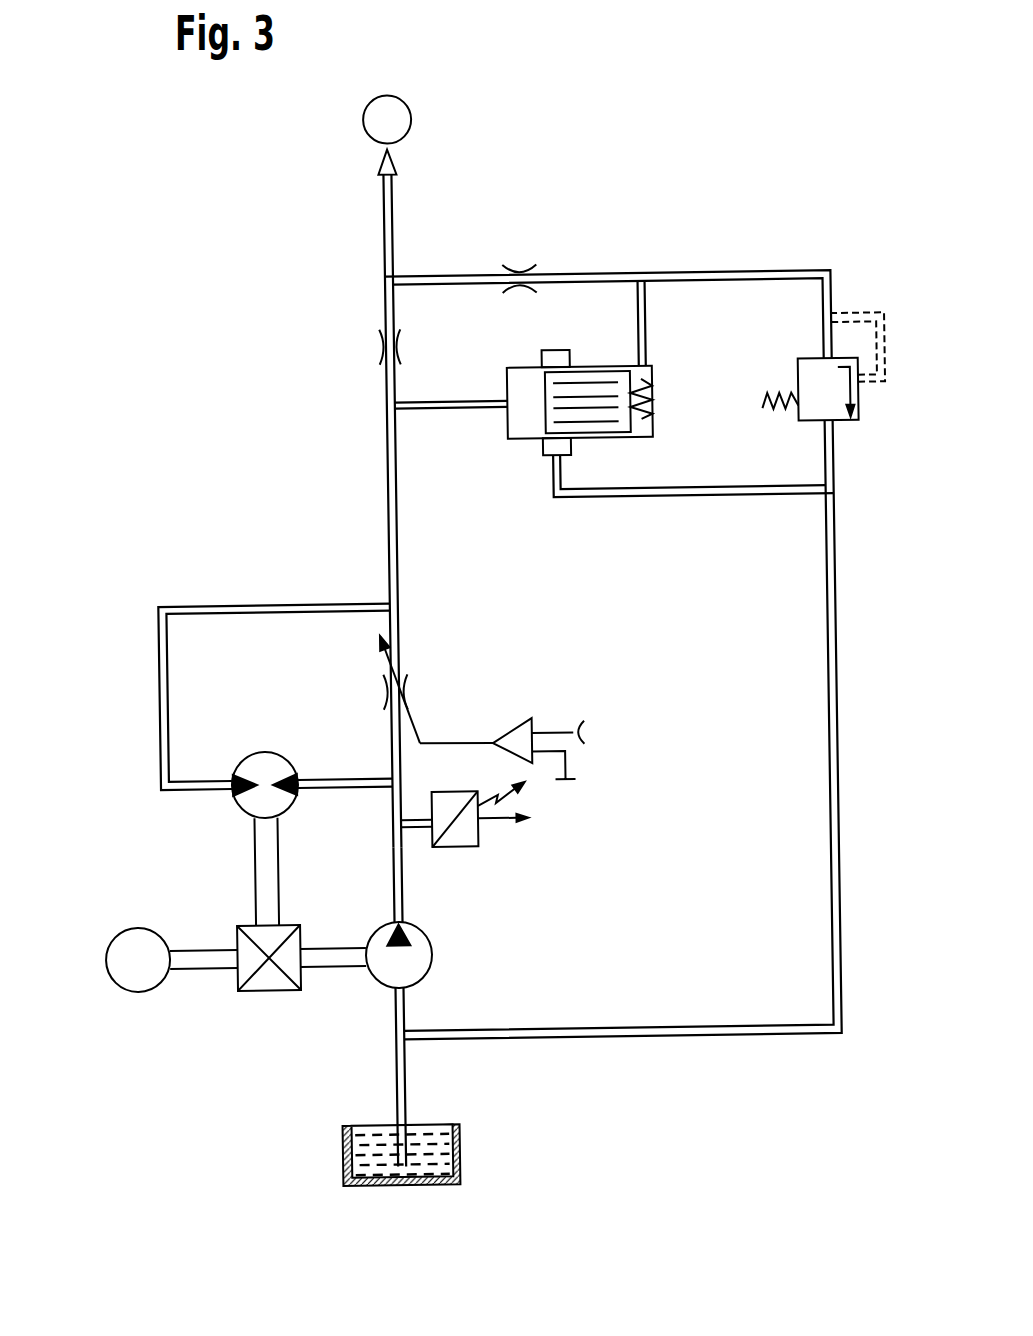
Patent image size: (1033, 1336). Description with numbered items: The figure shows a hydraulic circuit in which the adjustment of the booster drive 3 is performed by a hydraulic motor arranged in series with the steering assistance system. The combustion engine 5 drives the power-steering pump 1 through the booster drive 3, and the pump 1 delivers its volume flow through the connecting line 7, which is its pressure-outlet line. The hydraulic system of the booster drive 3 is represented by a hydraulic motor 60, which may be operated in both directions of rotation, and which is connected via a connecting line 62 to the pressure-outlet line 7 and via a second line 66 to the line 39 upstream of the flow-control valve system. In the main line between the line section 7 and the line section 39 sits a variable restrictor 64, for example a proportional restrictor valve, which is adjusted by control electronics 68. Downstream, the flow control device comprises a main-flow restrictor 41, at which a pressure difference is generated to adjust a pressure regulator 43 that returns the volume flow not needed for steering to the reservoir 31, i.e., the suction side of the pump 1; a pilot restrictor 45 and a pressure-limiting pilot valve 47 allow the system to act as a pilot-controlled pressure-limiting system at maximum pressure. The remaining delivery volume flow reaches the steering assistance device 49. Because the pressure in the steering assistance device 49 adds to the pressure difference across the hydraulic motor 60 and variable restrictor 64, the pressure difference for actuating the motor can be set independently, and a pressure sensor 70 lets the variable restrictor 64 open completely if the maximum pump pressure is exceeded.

The power-steering pump 1 is at (418, 954).
The booster drive 3 is at (264, 981).
The combustion engine 5 is at (102, 956).
The connecting line 7 is at (399, 889).
The reservoir 31 is at (453, 1142).
The line 39 is at (390, 455).
The main-flow restrictor 41 is at (386, 342).
The pressure regulator 43 is at (604, 378).
The pilot restrictor 45 is at (533, 266).
The pressure-limiting pilot valve 47 is at (821, 384).
The steering assistance device 49 is at (406, 146).
The hydraulic motor 60 is at (248, 796).
The connecting line 62 is at (346, 777).
The variable restrictor 64 is at (407, 677).
The second line 66 is at (183, 602).
The control electronics 68 is at (585, 734).
The pressure sensor 70 is at (502, 820).